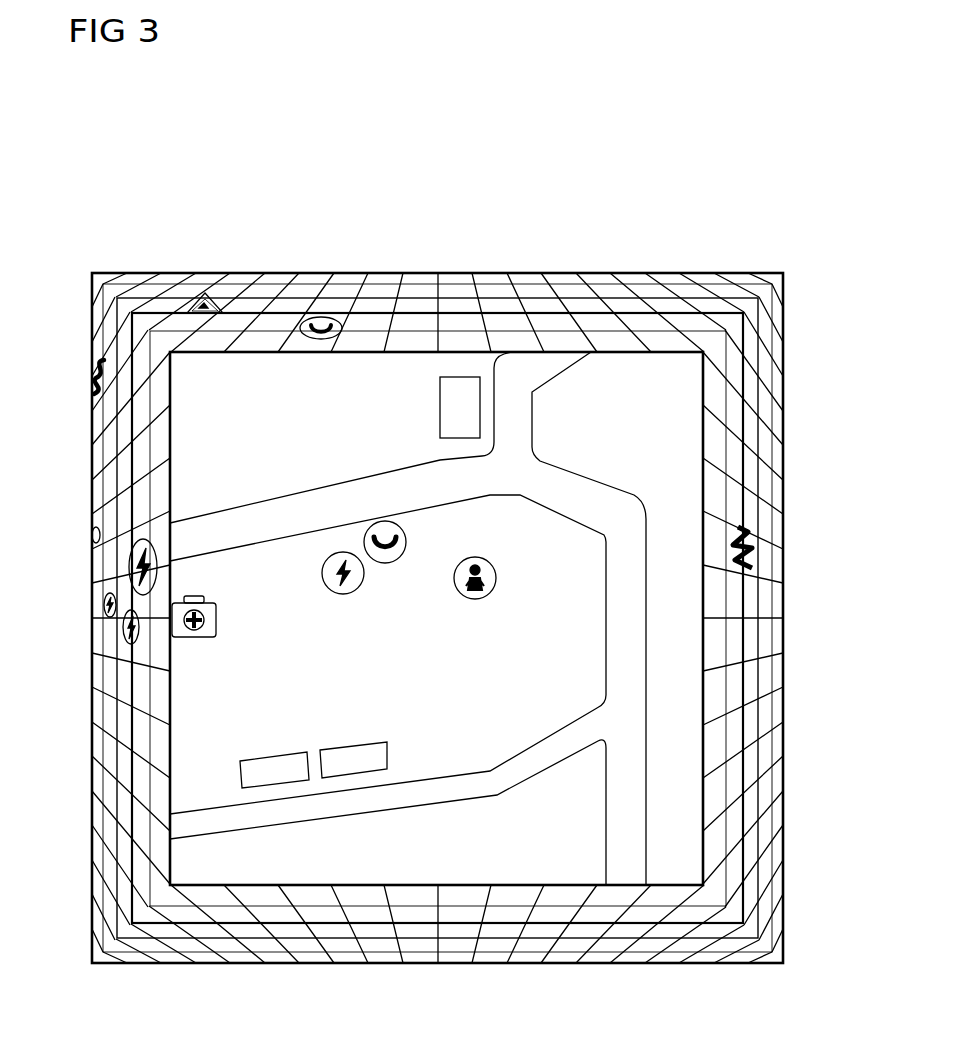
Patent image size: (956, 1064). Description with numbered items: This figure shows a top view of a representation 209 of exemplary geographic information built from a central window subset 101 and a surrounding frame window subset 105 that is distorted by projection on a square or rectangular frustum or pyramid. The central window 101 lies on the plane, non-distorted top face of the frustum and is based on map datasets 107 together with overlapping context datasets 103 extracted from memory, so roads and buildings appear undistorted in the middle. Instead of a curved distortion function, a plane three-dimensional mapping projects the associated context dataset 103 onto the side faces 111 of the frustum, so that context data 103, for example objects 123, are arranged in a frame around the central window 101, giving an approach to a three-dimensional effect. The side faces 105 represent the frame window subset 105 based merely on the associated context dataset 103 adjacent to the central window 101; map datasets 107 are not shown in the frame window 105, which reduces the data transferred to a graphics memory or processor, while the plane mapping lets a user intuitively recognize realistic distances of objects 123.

The representation 209 is at (657, 272).
The central window subset 101 is at (693, 426).
The context dataset 103 is at (128, 645).
The frame window subset 105 is at (122, 770).
The map dataset 107 is at (686, 657).
The side faces 111 is at (125, 886).
The object 123 is at (130, 567).